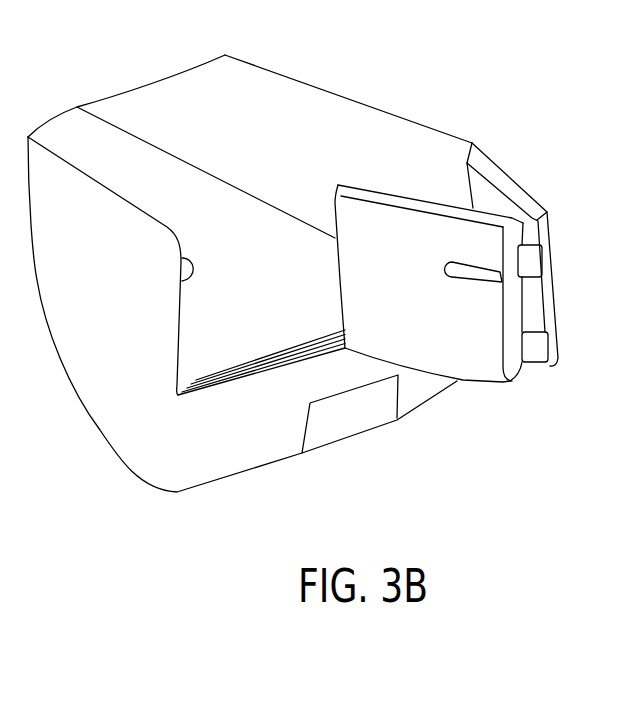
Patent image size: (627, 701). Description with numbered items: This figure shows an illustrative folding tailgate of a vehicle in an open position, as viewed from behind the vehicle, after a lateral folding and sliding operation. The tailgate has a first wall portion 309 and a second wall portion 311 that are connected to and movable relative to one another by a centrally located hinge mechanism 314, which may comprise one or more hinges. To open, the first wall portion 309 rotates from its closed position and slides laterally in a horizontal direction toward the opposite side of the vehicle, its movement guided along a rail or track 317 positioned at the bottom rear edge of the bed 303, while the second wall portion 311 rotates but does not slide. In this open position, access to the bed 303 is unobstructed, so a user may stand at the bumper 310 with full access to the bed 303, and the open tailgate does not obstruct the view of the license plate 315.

The bed 303 is at (243, 252).
The first wall portion 309 is at (347, 186).
The bumper 310 is at (243, 464).
The second wall portion 311 is at (522, 186).
The hinge mechanism 314 is at (533, 260).
The license plate 315 is at (372, 432).
The rail or track 317 is at (263, 378).